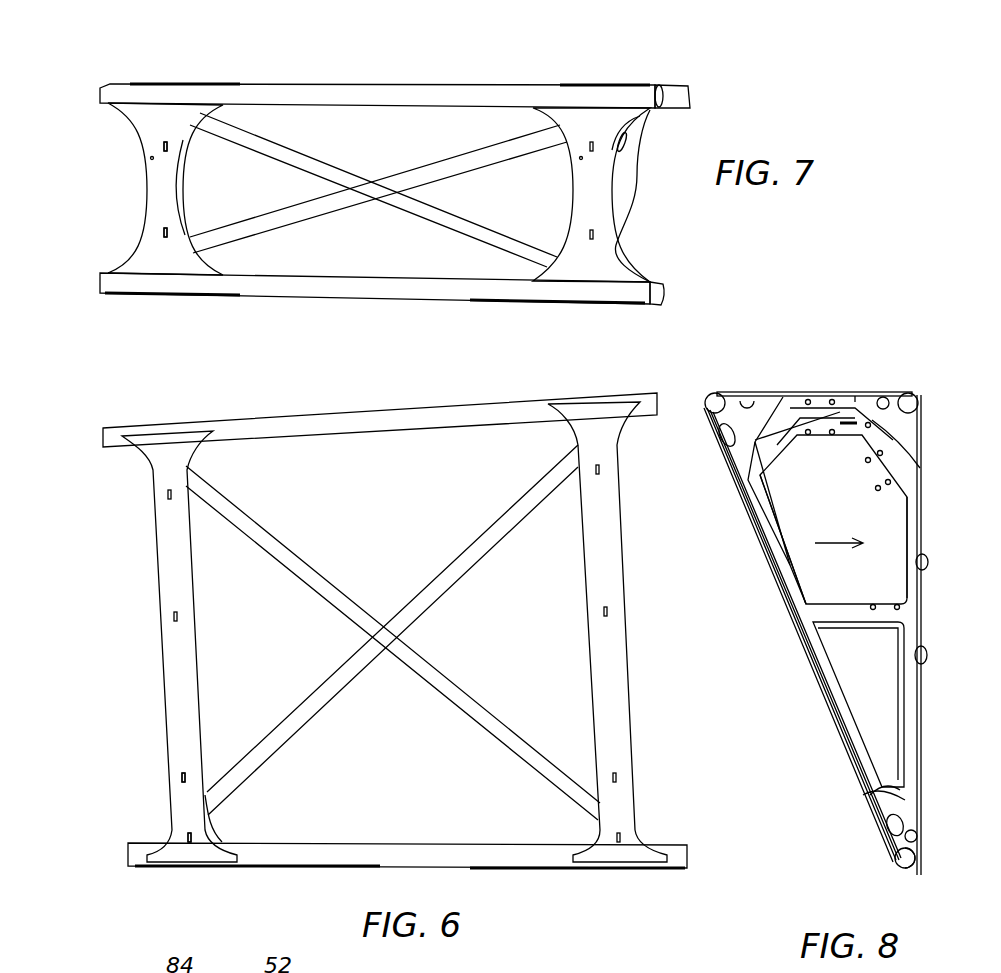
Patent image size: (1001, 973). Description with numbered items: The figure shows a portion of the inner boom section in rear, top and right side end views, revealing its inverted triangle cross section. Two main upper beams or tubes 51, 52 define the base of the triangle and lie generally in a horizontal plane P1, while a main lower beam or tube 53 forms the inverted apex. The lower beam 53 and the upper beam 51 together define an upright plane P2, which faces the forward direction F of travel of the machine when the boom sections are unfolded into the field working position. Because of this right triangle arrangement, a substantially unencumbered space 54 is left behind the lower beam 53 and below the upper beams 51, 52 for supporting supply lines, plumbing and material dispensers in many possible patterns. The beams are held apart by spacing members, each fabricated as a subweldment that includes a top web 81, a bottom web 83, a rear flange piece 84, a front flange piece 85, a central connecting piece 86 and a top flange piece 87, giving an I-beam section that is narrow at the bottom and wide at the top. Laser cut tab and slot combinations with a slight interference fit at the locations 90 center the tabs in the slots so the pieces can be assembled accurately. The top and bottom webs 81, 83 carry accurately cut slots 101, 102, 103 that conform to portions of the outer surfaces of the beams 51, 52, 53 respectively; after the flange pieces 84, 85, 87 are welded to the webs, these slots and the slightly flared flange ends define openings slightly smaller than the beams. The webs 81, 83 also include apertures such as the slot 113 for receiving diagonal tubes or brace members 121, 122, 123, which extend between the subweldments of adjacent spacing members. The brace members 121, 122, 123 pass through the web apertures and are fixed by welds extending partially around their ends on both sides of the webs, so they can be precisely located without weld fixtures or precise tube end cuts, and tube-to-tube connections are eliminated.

In FIG. 7, the main upper beam 51 is at (320, 93).
In FIG. 8, the main upper beam 51 is at (912, 394).
In FIG. 7, the main upper beam 52 is at (385, 288).
In FIG. 6, the main upper beam 52 is at (303, 415).
In FIG. 8, the main upper beam 52 is at (714, 394).
In FIG. 7, the main lower beam 53 is at (680, 95).
In FIG. 6, the main lower beam 53 is at (357, 845).
In FIG. 8, the main lower beam 53 is at (900, 870).
In FIG. 8, the unencumbered space 54 is at (789, 728).
In FIG. 8, the top web 81 is at (777, 458).
In FIG. 8, the bottom web 83 is at (893, 785).
In FIG. 6, the rear flange piece 84 is at (185, 588).
In FIG. 8, the rear flange piece 84 is at (763, 572).
In FIG. 8, the front flange piece 85 is at (915, 566).
In FIG. 8, the central connecting piece 86 is at (812, 610).
In FIG. 7, the top flange piece 87 is at (168, 112).
In FIG. 8, the top flange piece 87 is at (857, 395).
In FIG. 7, the tab and slot combinations 90 is at (170, 233).
In FIG. 6, the tab and slot combinations 90 is at (197, 840).
In FIG. 8, the slot 101 is at (885, 455).
In FIG. 8, the slot 102 is at (720, 428).
In FIG. 8, the slot 103 is at (915, 872).
In FIG. 8, the slot 113 is at (880, 797).
In FIG. 6, the brace member 121 is at (432, 672).
In FIG. 8, the brace member 121 is at (910, 515).
In FIG. 7, the brace member 122 is at (410, 175).
In FIG. 8, the brace member 122 is at (803, 423).
In FIG. 7, the brace member 123 is at (430, 222).
In FIG. 6, the brace member 123 is at (458, 557).
In FIG. 8, the brace member 123 is at (760, 515).
In FIG. 8, the horizontal plane P1 is at (820, 390).
In FIG. 8, the upright plane P2 is at (918, 660).
In FIG. 8, the forward direction F is at (850, 545).